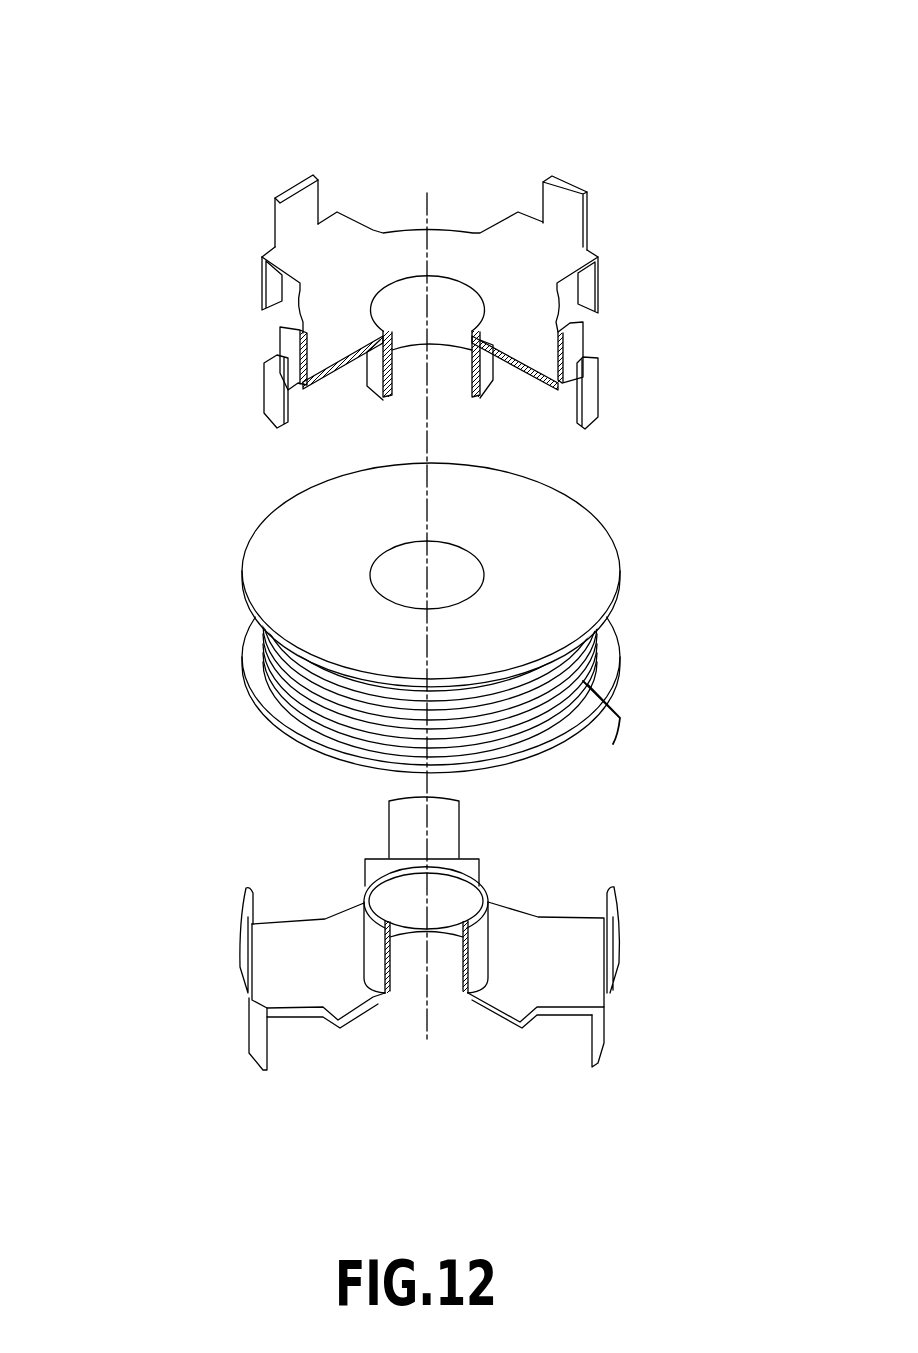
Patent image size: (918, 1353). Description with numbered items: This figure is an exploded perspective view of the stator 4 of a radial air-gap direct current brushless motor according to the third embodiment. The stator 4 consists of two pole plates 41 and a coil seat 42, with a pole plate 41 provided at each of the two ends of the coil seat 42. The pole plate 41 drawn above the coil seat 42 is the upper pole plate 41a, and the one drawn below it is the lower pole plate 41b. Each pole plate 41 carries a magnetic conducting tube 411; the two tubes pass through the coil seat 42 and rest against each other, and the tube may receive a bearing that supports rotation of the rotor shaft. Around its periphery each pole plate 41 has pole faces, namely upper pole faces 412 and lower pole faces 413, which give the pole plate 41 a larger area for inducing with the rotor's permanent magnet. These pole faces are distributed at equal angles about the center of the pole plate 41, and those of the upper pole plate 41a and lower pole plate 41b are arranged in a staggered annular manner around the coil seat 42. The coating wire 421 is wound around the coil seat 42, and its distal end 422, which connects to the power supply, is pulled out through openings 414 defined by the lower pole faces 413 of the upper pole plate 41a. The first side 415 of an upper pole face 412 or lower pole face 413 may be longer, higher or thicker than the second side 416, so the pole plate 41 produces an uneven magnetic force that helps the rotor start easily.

The stator 4 is at (104, 302).
The pole plate 41 is at (245, 98).
The upper pole plate 41a is at (483, 253).
The lower pole plate 41b is at (520, 978).
The magnetic conducting tube 411 is at (482, 380).
The upper pole face 412 is at (572, 190).
The lower pole face 413 is at (600, 290).
The opening 414 is at (298, 403).
The first side 415 is at (322, 195).
The second side 416 is at (275, 225).
The coil seat 42 is at (590, 562).
The coating wire 421 is at (583, 653).
The distal end 422 is at (623, 707).